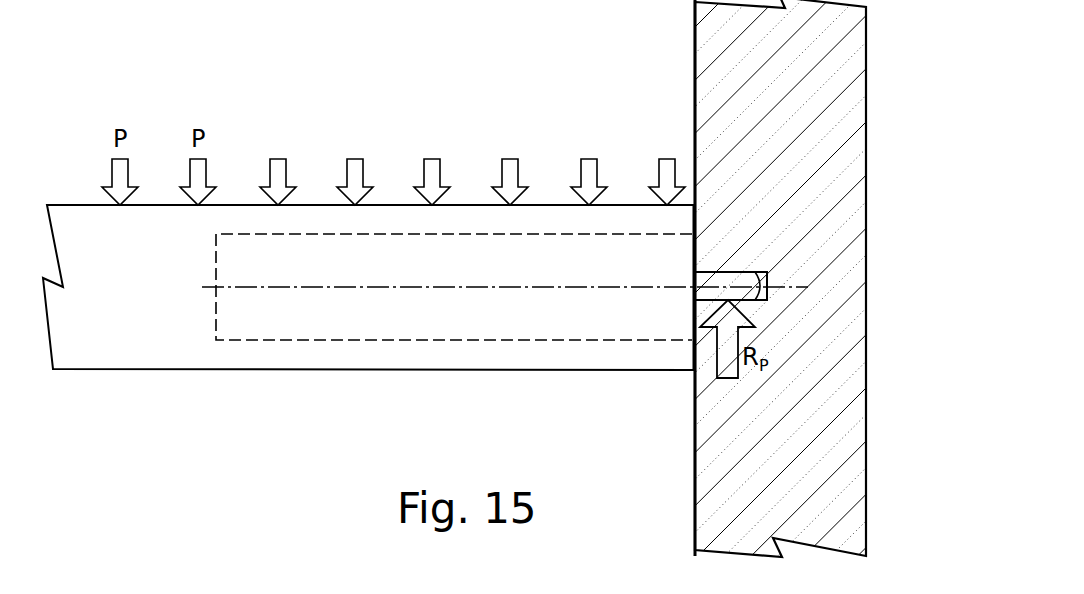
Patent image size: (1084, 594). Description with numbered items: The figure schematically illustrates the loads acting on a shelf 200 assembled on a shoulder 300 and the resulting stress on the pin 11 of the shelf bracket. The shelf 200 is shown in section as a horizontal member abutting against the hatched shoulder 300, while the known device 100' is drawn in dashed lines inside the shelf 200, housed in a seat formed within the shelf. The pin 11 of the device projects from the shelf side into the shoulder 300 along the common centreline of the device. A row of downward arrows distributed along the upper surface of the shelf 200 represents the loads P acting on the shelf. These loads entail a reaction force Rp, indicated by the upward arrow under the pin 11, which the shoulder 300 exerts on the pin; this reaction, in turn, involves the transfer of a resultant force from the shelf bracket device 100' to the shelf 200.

The pin 11 is at (718, 280).
The known device 100' is at (505, 287).
The shelf 200 is at (146, 297).
The shoulder 300 is at (851, 106).